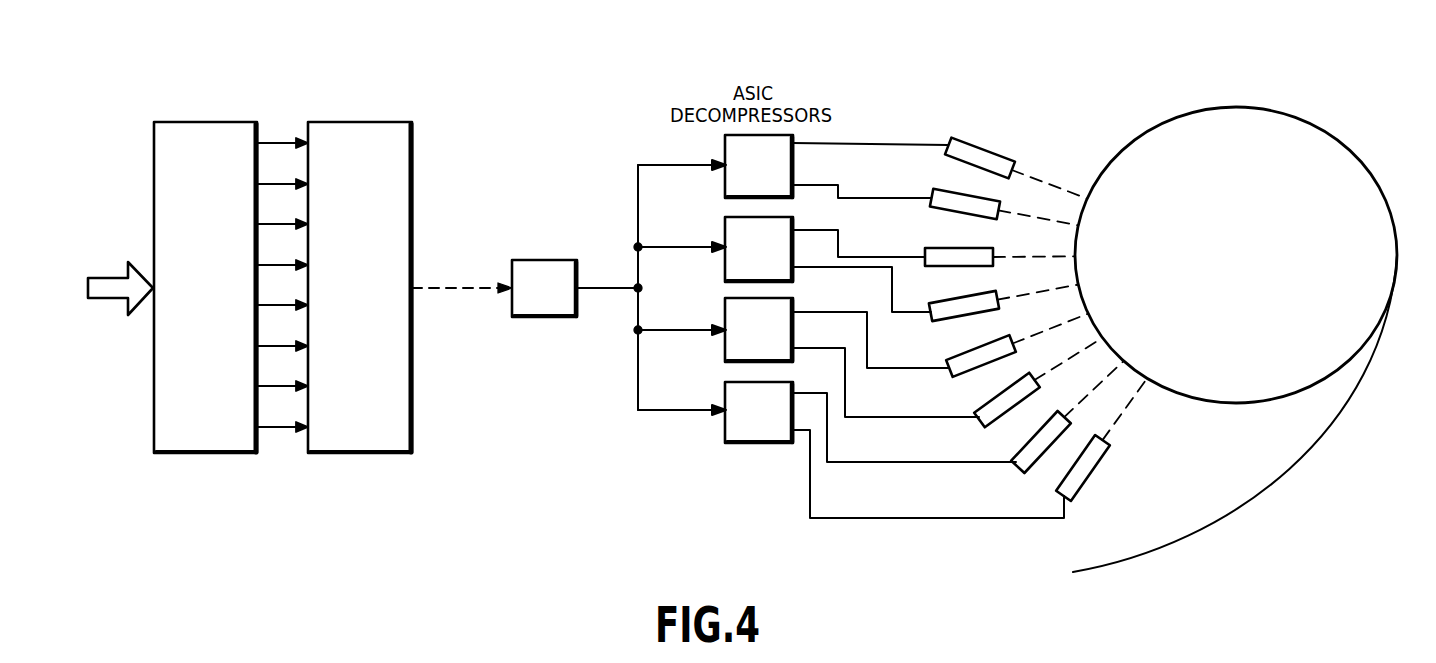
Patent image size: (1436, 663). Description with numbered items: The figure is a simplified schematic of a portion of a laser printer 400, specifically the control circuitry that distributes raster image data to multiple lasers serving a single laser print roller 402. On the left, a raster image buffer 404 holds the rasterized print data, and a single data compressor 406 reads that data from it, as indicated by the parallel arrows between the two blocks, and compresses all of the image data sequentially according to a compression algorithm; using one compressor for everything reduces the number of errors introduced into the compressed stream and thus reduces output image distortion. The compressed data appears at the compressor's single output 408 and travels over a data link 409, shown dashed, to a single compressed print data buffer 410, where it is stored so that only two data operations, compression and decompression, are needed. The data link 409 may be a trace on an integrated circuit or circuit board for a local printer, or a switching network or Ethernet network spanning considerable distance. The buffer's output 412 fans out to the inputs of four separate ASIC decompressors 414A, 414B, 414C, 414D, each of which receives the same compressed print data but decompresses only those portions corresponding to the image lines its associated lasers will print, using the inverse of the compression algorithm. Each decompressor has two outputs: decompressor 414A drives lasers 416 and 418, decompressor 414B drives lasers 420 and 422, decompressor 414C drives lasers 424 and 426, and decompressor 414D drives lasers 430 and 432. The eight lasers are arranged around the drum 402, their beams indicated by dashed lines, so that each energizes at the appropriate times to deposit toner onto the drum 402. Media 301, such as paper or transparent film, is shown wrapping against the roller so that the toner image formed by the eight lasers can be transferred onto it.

The laser printer 400 is at (594, 548).
The raster image buffer 404 is at (205, 453).
The data compressor 406 is at (367, 453).
The output 408 is at (414, 289).
The data link 409 is at (460, 285).
The compressed print data buffer 410 is at (547, 317).
The output 412 is at (606, 288).
The ASIC decompressor 414A is at (722, 148).
The ASIC decompressor 414B is at (722, 230).
The ASIC decompressor 414C is at (722, 313).
The ASIC decompressor 414D is at (722, 393).
The laser 416 is at (990, 146).
The laser 418 is at (931, 190).
The laser 420 is at (925, 249).
The laser 422 is at (932, 321).
The laser 424 is at (953, 377).
The laser 426 is at (985, 427).
The laser 430 is at (1024, 473).
The laser 432 is at (1108, 450).
The laser print roller 402 is at (1238, 107).
The media 301 is at (1232, 520).